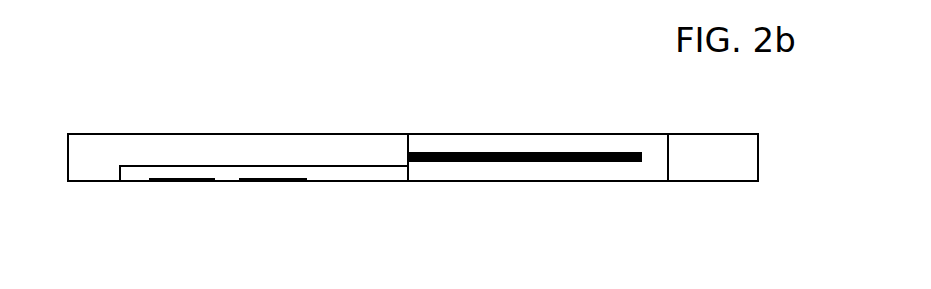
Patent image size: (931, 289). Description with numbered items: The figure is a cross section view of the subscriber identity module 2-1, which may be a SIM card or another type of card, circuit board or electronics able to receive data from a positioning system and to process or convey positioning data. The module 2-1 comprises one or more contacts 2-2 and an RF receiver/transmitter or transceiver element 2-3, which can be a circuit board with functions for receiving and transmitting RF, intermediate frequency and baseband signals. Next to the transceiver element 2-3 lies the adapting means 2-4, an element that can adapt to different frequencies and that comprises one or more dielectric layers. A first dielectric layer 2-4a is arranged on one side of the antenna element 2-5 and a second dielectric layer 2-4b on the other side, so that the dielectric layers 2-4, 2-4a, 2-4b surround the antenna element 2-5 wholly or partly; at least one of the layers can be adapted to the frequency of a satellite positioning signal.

The subscriber identity module 2-1 is at (697, 134).
The contacts 2-2 is at (176, 183).
The transceiver element 2-3 is at (370, 183).
The adapting means 2-4 is at (580, 183).
The first dielectric layer 2-4a is at (503, 146).
The second dielectric layer 2-4b is at (477, 170).
The antenna element 2-5 is at (600, 152).